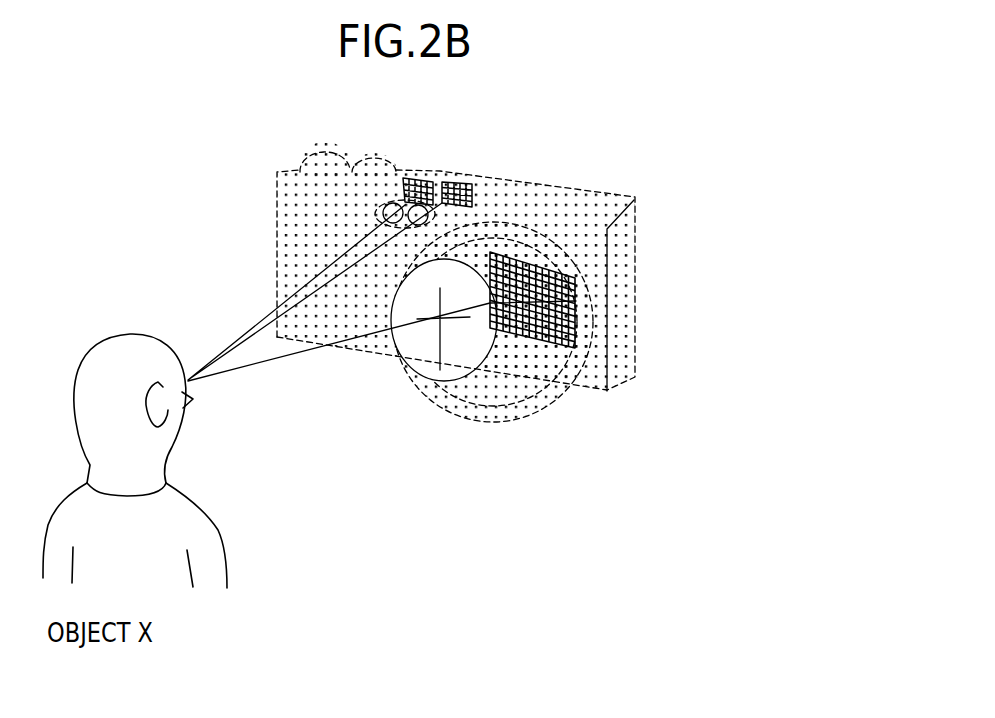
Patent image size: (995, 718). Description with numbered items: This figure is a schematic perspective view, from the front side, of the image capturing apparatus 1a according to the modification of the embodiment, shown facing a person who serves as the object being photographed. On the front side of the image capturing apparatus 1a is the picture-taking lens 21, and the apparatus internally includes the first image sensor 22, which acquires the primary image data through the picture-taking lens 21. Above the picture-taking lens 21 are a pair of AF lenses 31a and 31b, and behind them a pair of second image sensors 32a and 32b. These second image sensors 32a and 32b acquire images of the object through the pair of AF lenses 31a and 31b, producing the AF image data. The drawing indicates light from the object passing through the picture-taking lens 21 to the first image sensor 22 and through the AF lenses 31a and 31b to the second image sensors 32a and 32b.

The image capturing apparatus 1a is at (635, 198).
The picture-taking lens 21 is at (473, 372).
The first image sensor 22 is at (577, 298).
The AF lens 31a is at (403, 196).
The AF lens 31b is at (474, 190).
The second image sensor 32a is at (405, 178).
The second image sensor 32b is at (452, 182).